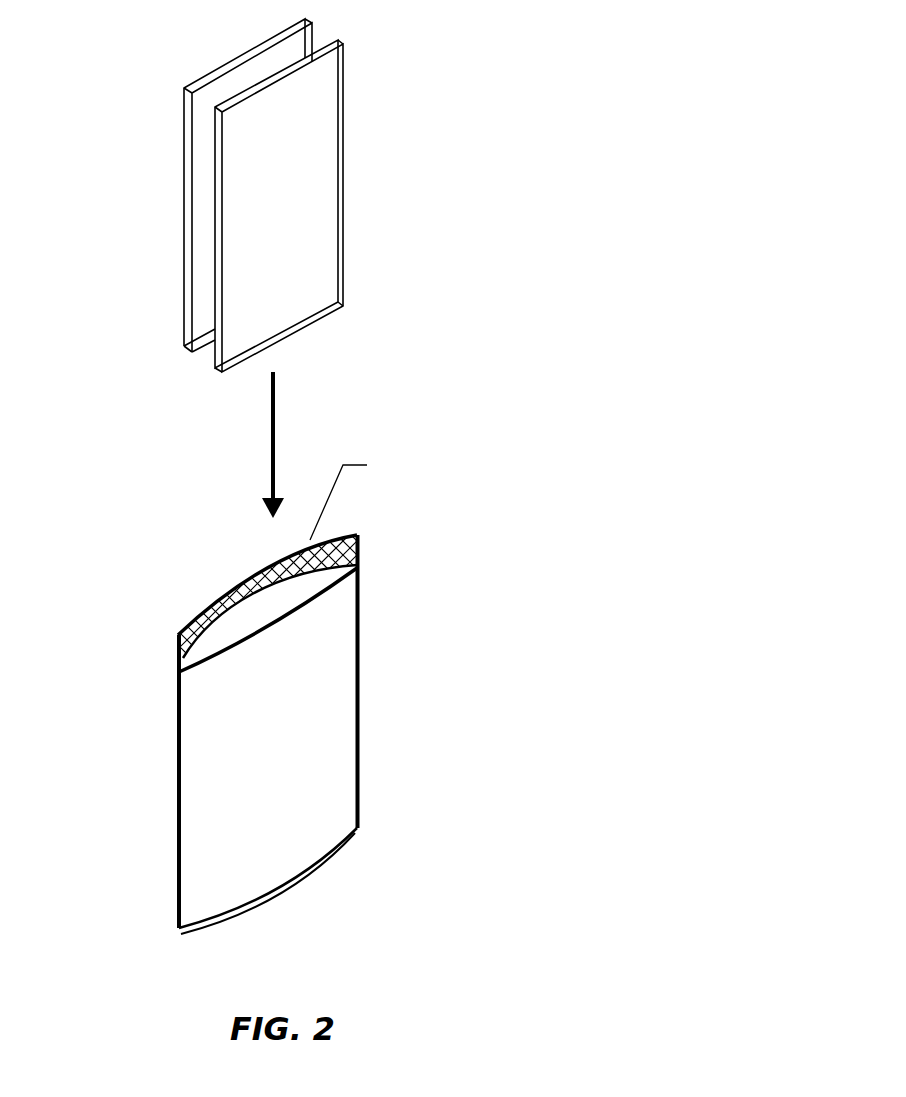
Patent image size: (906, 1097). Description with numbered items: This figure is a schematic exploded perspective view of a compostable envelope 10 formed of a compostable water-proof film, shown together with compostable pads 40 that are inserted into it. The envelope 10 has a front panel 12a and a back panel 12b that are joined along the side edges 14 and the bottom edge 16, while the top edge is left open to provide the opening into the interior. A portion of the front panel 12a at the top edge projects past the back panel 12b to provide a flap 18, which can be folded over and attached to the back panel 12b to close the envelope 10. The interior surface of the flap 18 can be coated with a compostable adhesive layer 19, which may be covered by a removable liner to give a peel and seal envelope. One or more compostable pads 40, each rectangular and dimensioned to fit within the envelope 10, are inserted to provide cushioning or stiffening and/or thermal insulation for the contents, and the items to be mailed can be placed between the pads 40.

The compostable envelope 10 is at (398, 758).
The front panel 12a is at (262, 612).
The back panel 12b is at (313, 658).
The side edges 14 is at (375, 340).
The bottom edge 16 is at (293, 878).
The flap 18 is at (180, 642).
The compostable adhesive layer 19 is at (203, 617).
The compostable pads 40 is at (179, 108).